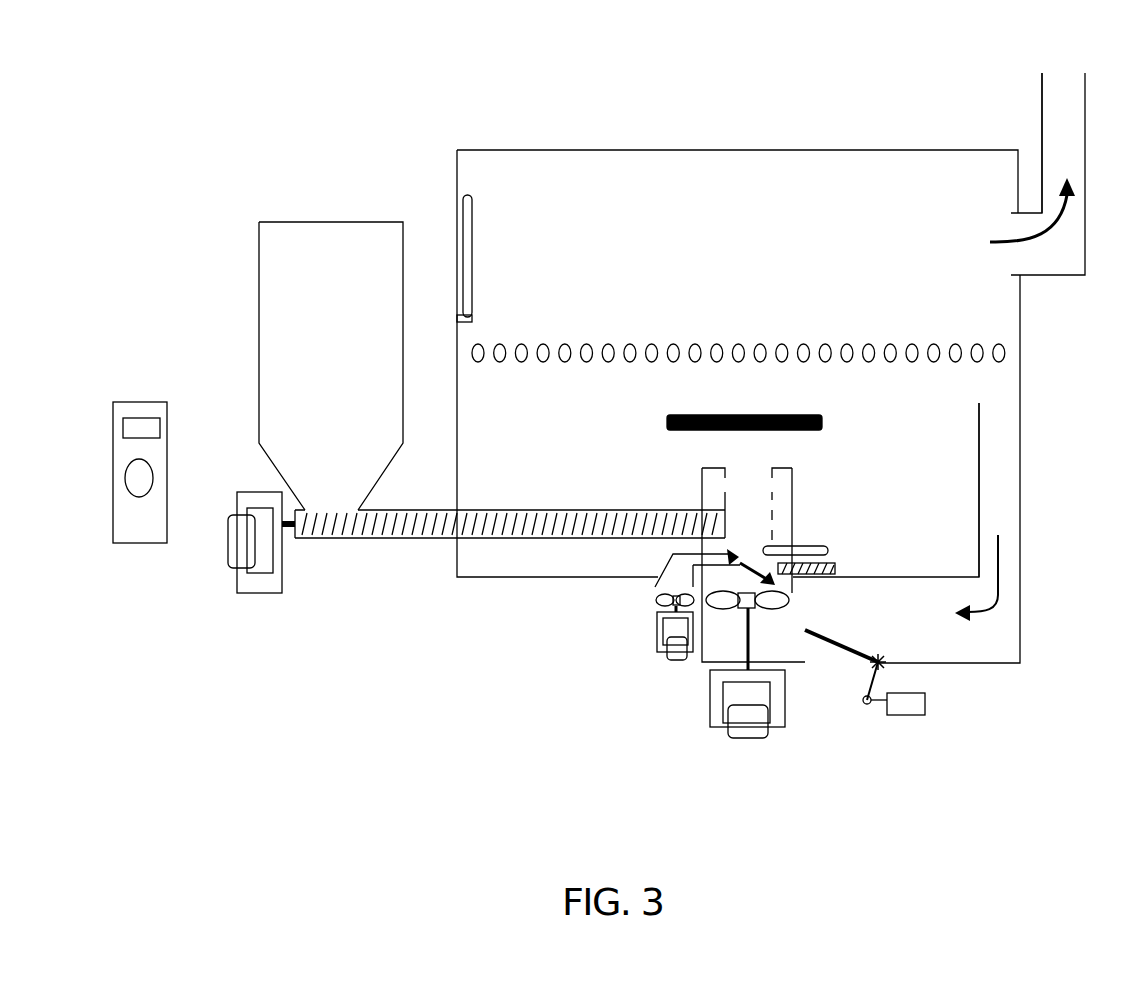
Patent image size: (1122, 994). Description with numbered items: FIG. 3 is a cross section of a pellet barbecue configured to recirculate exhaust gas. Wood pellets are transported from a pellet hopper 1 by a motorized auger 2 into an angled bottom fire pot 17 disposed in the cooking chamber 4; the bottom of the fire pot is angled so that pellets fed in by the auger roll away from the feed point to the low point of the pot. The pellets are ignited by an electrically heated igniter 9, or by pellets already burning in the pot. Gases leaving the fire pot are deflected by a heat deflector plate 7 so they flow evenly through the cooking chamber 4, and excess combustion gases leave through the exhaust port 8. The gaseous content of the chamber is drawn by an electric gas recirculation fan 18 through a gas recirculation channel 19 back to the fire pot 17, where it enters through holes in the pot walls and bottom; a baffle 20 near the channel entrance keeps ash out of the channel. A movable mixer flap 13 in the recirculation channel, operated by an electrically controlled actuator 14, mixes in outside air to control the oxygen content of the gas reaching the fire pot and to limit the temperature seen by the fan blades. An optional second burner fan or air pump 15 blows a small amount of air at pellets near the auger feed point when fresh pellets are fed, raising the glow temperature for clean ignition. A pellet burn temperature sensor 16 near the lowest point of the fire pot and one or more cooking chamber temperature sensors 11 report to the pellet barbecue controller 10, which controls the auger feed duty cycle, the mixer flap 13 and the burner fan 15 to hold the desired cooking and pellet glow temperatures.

The pellet hopper 1 is at (259, 273).
The motorized auger 2 is at (334, 482).
The cooking chamber 4 is at (749, 325).
The heat deflector plate 7 is at (667, 425).
The exhaust port 8 is at (1075, 277).
The electrically heated igniter 9 is at (836, 566).
The pellet barbecue controller 10 is at (113, 473).
The cooking chamber temperature sensor 11 is at (476, 277).
The movable mixer flap 13 is at (845, 652).
The electrically controlled actuator 14 is at (913, 717).
The second burner fan or air pump 15 is at (638, 634).
The pellet burn temperature sensor 16 is at (818, 545).
The angled bottom fire pot 17 is at (757, 551).
The gas recirculation fan 18 is at (683, 712).
The gas recirculation channel 19 is at (984, 591).
The baffle 20 is at (979, 430).